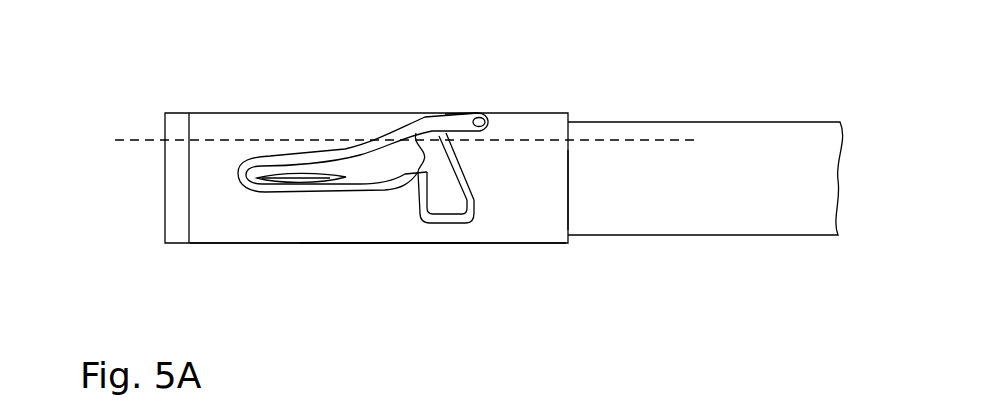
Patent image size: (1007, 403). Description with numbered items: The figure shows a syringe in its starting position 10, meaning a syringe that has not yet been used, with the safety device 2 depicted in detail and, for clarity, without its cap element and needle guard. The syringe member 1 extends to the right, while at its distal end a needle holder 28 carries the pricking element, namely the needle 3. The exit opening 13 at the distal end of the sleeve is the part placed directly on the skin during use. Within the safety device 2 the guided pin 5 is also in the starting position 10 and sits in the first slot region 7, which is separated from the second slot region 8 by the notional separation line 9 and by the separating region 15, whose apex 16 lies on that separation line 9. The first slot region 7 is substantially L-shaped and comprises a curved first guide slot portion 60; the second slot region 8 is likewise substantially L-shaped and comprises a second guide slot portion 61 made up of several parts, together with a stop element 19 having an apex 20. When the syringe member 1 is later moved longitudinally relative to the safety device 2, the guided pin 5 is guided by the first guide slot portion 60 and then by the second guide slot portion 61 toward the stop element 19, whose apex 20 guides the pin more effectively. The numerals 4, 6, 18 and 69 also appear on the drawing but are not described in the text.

The syringe member 1 is at (778, 137).
The safety device 2 is at (540, 125).
The needle 3 is at (303, 182).
The spring arm 4 is at (369, 173).
The guided pin 5 is at (481, 113).
The spring element 6 is at (390, 98).
The first slot region 7 is at (369, 173).
The second slot region 8 is at (378, 291).
The notional separation line 9 is at (138, 139).
The starting position 10 is at (92, 71).
The exit opening 13 is at (165, 192).
The separating region 15 is at (457, 113).
The apex 16 is at (417, 113).
The bottom wall 18 is at (378, 291).
The stop element 19 is at (391, 224).
The apex 20 is at (433, 223).
The needle holder 28 is at (448, 200).
The first guide slot portion 60 is at (369, 173).
The second guide slot portion 61 is at (340, 275).
The receiving space 69 is at (500, 212).